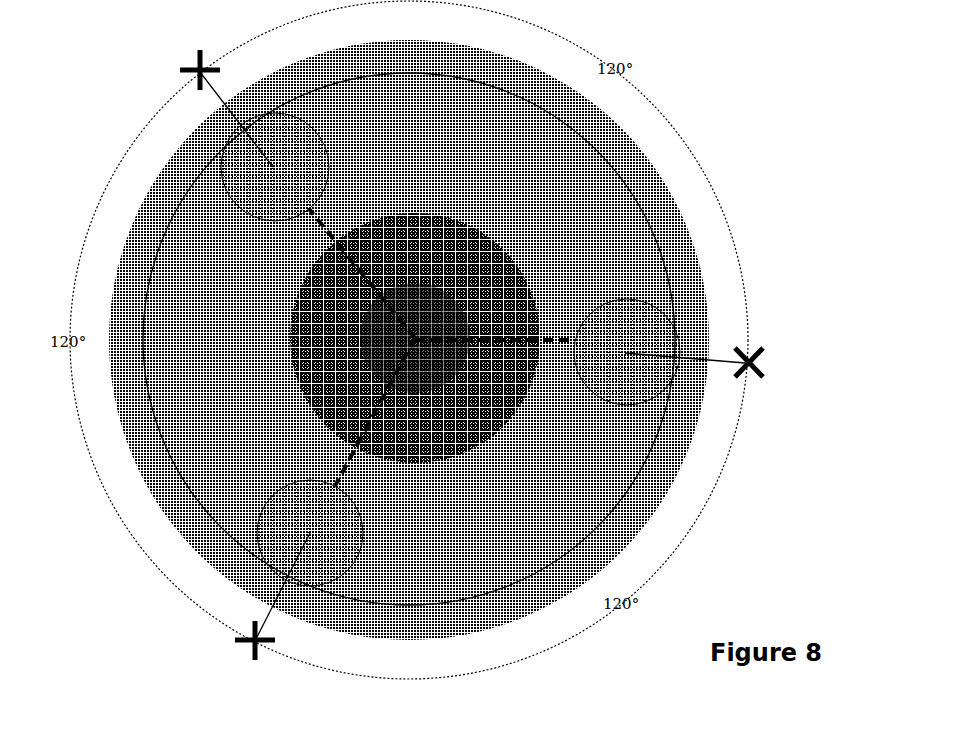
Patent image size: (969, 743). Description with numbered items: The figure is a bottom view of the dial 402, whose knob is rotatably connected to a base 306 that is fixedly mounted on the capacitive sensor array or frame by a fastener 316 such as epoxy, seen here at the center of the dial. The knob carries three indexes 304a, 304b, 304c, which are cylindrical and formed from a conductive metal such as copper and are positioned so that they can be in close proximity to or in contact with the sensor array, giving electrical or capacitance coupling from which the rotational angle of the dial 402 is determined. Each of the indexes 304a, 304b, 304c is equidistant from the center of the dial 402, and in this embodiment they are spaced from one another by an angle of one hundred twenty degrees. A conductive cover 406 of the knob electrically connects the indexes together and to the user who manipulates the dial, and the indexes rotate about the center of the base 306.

The dial 402 is at (72, 73).
The conductive cover 406 is at (241, 321).
The base 306 is at (487, 438).
The fastener 316 is at (440, 290).
The index 304a is at (312, 128).
The index 304b is at (628, 300).
The index 304c is at (363, 533).